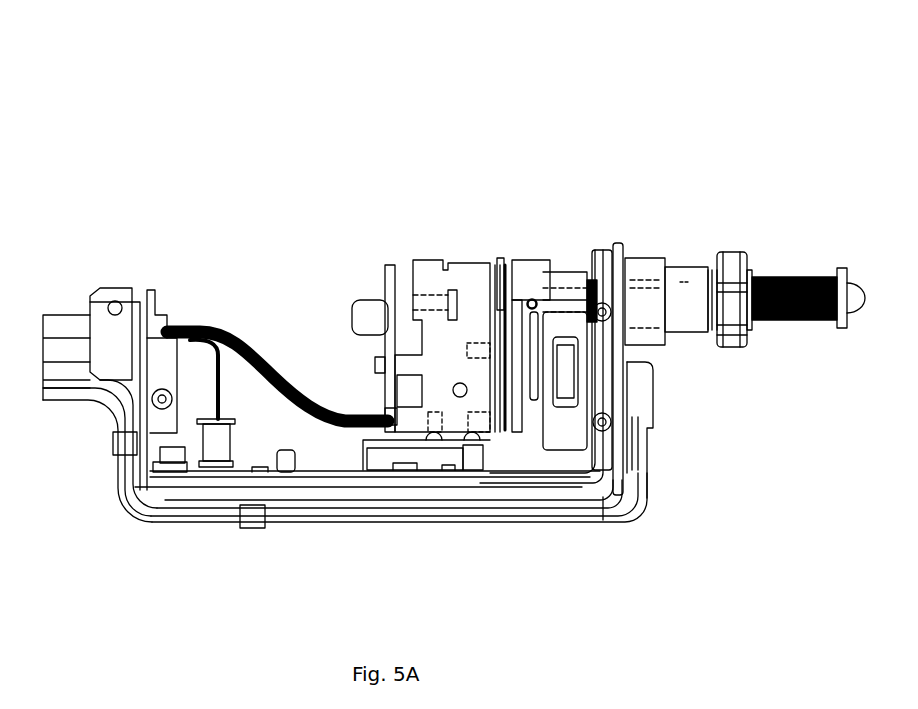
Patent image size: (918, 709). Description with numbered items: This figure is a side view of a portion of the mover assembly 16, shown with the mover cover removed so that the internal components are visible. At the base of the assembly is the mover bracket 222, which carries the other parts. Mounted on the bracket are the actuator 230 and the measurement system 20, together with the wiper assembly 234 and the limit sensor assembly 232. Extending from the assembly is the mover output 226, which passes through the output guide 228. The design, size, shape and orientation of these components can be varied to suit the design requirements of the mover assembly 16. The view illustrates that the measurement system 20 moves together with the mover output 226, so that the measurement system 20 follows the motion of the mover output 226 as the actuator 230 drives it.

The mover assembly 16 is at (300, 240).
The measurement system 20 is at (428, 265).
The wiper assembly 234 is at (500, 262).
The actuator 230 is at (571, 280).
The output guide 228 is at (641, 262).
The mover output 226 is at (775, 277).
The mover bracket 222 is at (287, 497).
The limit sensor assembly 232 is at (286, 463).